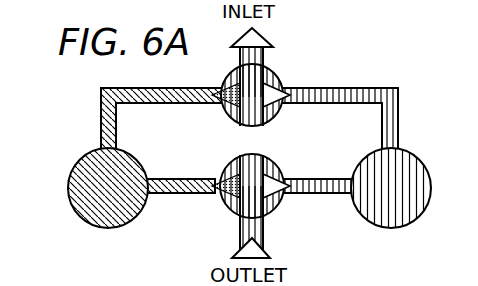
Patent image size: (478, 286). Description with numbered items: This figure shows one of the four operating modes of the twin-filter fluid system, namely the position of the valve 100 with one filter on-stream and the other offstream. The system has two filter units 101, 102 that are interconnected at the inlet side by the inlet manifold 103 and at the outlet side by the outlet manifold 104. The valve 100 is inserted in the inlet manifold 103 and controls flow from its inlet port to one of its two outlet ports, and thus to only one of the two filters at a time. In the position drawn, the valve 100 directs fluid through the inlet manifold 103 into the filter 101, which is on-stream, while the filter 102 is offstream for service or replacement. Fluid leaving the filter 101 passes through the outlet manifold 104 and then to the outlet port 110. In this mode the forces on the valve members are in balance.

The valve 100 is at (273, 72).
The filter unit 101 is at (420, 158).
The filter unit 102 is at (82, 160).
The inlet manifold 103 is at (357, 88).
The outlet manifold 104 is at (322, 177).
The outlet port 110 is at (265, 248).